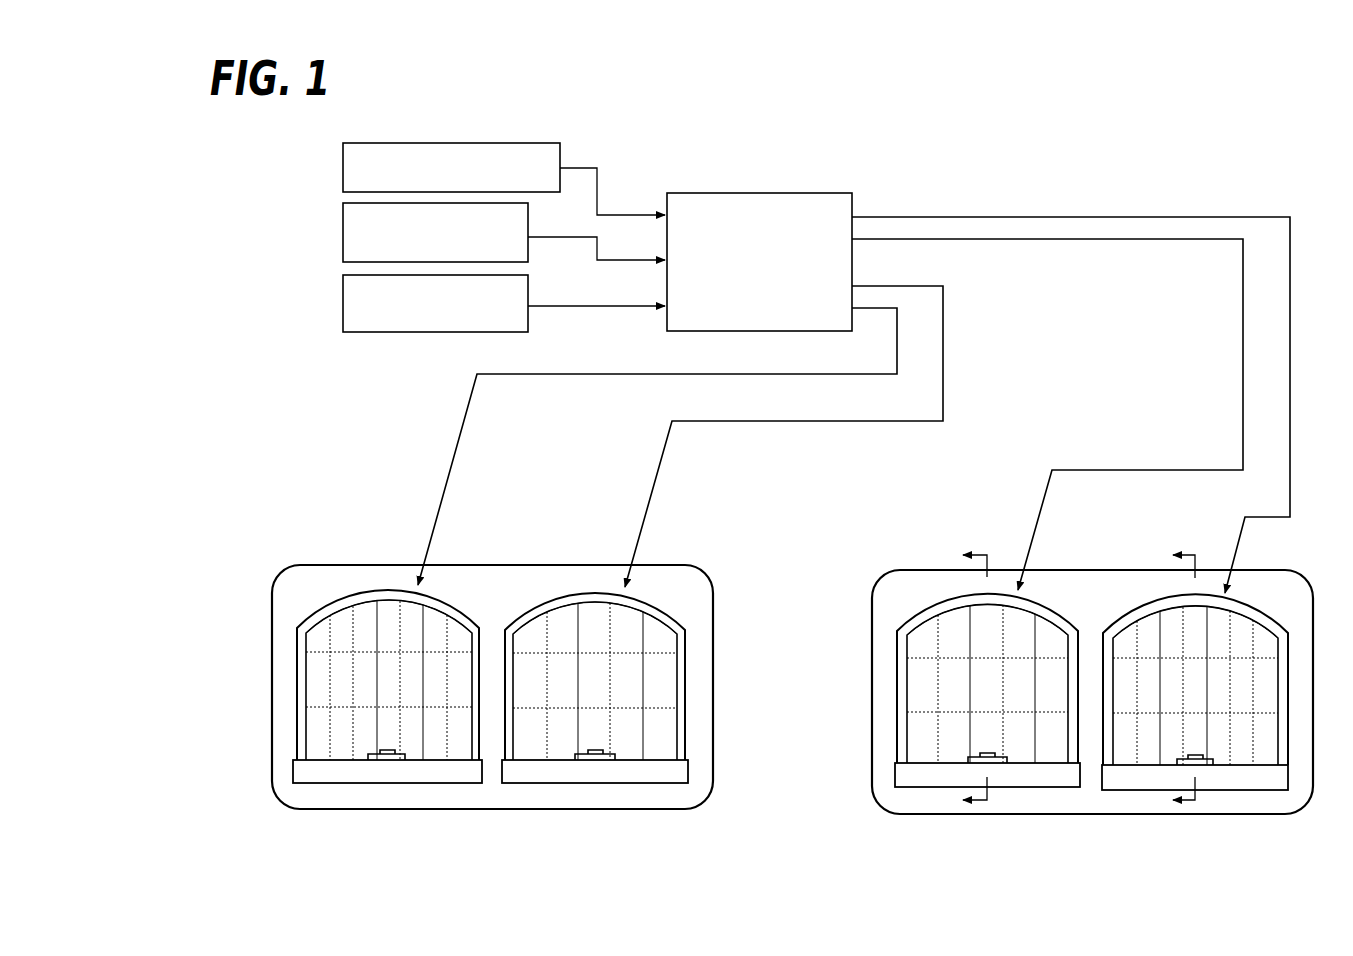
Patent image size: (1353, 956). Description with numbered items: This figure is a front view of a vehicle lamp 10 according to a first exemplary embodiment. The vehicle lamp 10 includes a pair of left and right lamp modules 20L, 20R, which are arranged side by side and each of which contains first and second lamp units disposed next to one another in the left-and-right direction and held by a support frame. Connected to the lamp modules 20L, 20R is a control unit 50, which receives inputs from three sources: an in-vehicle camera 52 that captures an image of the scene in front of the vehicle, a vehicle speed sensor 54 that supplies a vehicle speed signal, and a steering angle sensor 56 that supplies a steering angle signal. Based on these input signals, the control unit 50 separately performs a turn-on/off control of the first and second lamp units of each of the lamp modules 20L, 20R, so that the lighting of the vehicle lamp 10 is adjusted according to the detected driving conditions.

The vehicle lamp 10 is at (1152, 196).
The control unit 50 is at (790, 193).
The in-vehicle camera 52 is at (343, 173).
The vehicle speed sensor 54 is at (343, 240).
The steering angle sensor 56 is at (343, 310).
The lamp module 20R is at (517, 527).
The lamp module 20L is at (1115, 537).